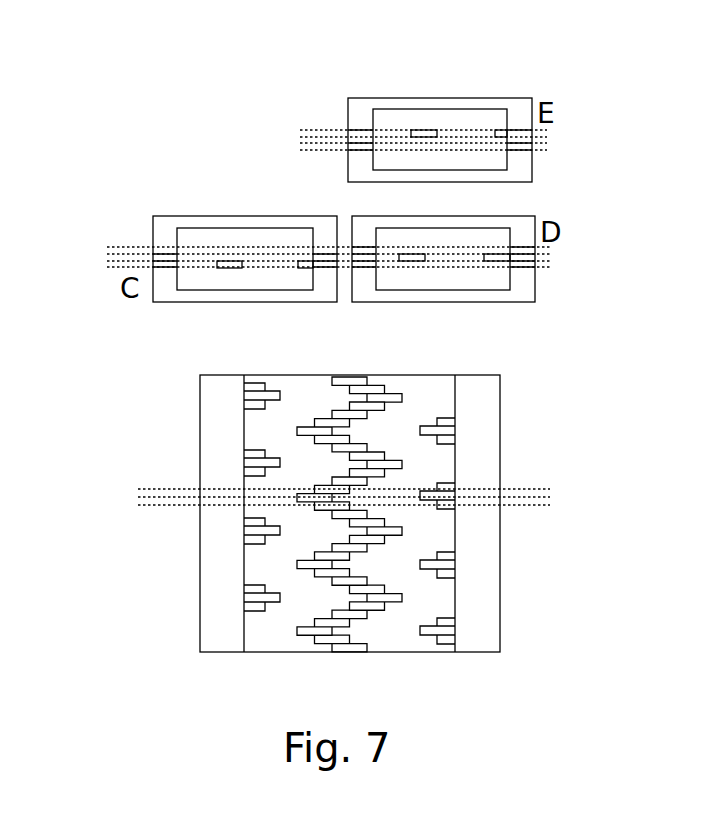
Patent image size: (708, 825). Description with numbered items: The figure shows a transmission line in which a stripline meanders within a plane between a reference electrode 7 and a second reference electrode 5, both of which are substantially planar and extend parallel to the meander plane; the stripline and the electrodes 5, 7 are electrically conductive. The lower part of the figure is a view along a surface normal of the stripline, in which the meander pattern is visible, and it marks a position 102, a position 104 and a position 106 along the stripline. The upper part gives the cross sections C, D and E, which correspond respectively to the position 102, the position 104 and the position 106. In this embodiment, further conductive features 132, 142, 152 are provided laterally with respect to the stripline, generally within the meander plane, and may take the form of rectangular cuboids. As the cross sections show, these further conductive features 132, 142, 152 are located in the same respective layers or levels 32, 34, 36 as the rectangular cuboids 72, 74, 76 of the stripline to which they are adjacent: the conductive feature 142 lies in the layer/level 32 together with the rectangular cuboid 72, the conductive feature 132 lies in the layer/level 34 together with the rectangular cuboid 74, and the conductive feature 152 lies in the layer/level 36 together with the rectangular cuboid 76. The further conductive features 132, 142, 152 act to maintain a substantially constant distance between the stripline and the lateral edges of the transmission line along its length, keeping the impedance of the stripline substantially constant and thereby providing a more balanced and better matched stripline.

The second reference electrode 5 is at (395, 98).
The reference electrode 7 is at (455, 181).
The layer/level 32 is at (302, 140).
The layer/level 34 is at (317, 138).
The layer/level 36 is at (337, 129).
The rectangular cuboid 72 is at (222, 257).
The rectangular cuboid 74 is at (426, 263).
The rectangular cuboid 76 is at (418, 130).
The position along the stripline 102 is at (140, 508).
The position along the stripline 104 is at (189, 498).
The position along the stripline 106 is at (168, 488).
The further conductive feature 132 is at (507, 266).
The further conductive feature 142 is at (297, 257).
The further conductive feature 152 is at (495, 130).